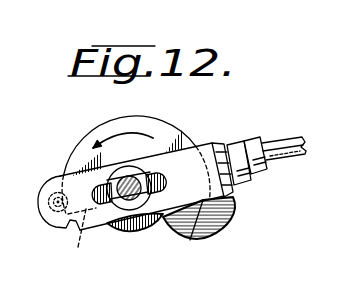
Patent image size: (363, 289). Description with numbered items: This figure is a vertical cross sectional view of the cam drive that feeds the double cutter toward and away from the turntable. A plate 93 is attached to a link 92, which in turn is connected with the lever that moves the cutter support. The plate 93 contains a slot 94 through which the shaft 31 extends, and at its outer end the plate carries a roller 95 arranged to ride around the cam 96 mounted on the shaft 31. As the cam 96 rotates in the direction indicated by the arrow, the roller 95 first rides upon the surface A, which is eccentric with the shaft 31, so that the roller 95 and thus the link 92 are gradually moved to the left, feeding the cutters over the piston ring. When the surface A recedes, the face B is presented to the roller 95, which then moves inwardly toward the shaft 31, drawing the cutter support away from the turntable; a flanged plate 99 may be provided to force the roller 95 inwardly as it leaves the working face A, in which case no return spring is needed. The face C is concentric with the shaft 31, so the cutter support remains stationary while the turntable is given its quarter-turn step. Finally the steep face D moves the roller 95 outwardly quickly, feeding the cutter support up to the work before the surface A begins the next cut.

The shaft 31 is at (150, 172).
The link 92 is at (284, 153).
The plate 93 is at (211, 144).
The slot 94 is at (62, 177).
The roller 95 is at (53, 223).
The cam 96 is at (168, 135).
The flanged plate 99 is at (221, 236).
The surface of the cam A is at (92, 114).
The face of the cam B is at (190, 238).
The face of the cam C is at (137, 232).
The face of the cam D is at (72, 242).